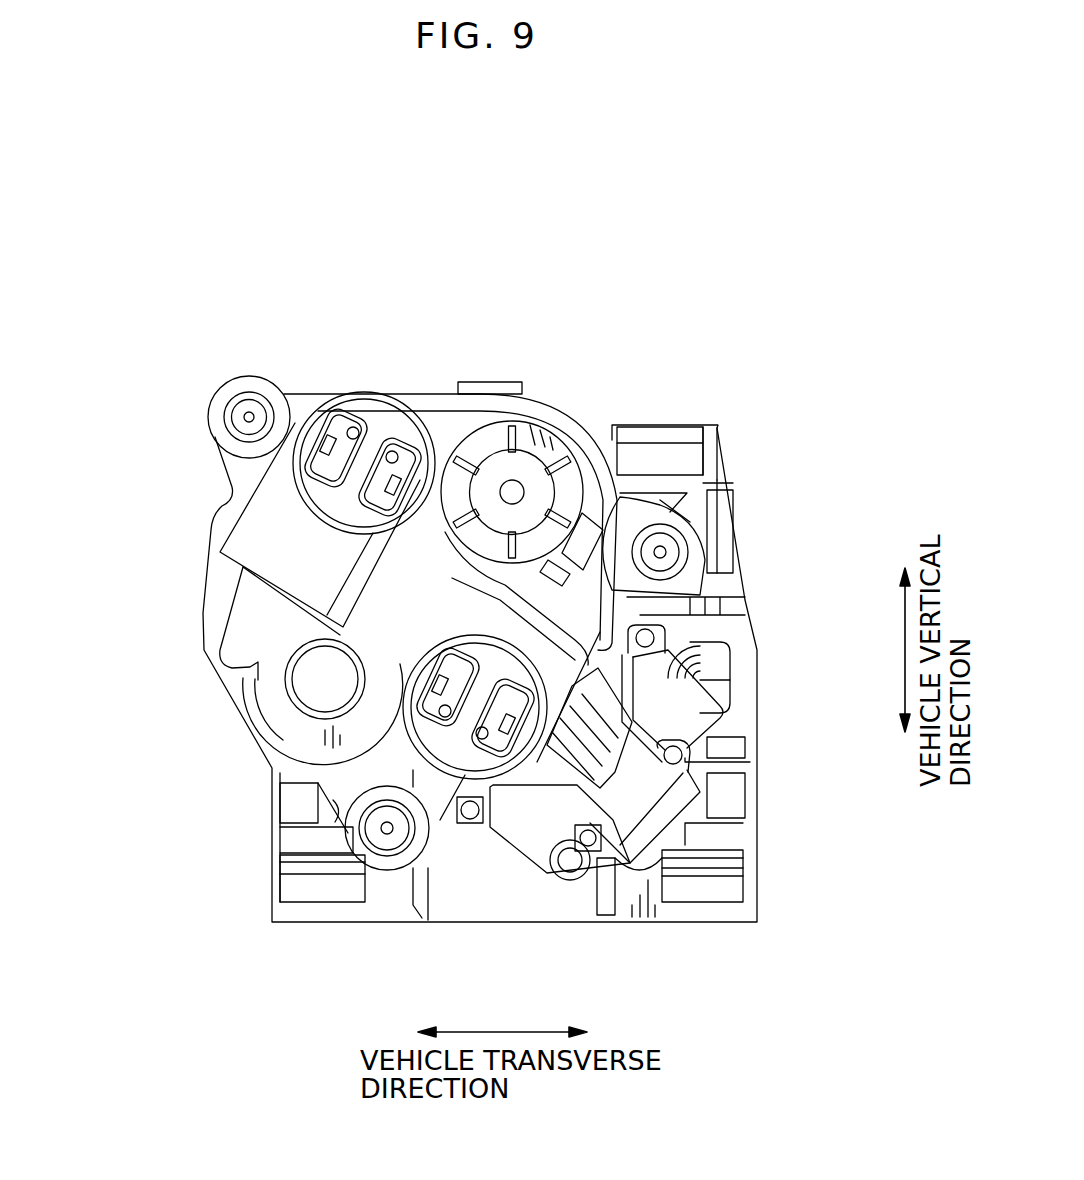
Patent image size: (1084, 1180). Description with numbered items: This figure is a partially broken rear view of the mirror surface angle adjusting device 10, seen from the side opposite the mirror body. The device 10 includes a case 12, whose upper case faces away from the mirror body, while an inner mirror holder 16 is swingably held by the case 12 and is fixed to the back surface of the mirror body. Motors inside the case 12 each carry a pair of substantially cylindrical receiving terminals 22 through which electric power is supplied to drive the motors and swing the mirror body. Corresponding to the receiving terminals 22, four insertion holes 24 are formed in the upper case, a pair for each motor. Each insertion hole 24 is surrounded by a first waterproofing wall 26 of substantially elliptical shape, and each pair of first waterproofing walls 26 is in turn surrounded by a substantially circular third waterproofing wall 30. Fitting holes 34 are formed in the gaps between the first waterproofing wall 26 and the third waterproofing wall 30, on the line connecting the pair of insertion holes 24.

The mirror surface angle adjusting device 10 is at (250, 195).
The case 12 is at (206, 598).
The inner mirror holder 16 is at (752, 722).
The receiving terminal 22 is at (587, 595).
The insertion hole 24 is at (443, 715).
The first waterproofing wall 26 is at (490, 673).
The third waterproofing wall 30 is at (460, 648).
The fitting hole 34 is at (443, 700).